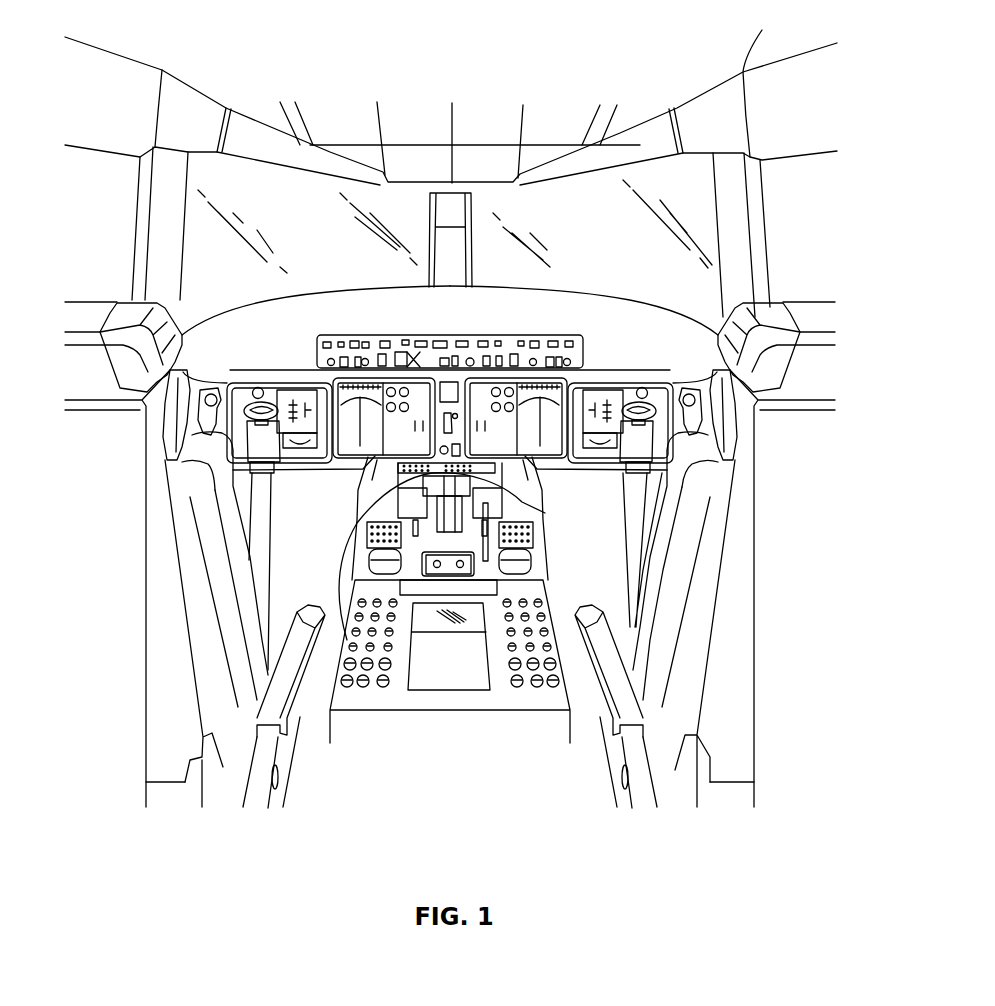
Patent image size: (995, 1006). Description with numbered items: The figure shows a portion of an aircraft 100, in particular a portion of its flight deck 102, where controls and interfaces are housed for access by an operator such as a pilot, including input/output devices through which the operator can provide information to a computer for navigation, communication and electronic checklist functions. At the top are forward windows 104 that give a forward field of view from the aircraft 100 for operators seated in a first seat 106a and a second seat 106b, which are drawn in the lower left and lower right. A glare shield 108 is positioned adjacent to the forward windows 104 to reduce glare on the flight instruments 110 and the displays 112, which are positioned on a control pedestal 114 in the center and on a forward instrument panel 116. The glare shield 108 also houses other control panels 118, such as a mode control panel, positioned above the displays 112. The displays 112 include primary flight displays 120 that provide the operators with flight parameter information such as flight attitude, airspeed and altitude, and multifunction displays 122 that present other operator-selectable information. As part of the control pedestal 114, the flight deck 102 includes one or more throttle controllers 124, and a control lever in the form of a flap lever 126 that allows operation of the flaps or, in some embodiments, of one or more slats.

The aircraft 100 is at (233, 45).
The flight deck 102 is at (565, 854).
The forward windows 104 is at (315, 197).
The first seat 106a is at (225, 603).
The second seat 106b is at (677, 590).
The glare shield 108 is at (672, 343).
The flight instruments 110 is at (652, 320).
The displays 112 is at (290, 310).
The control pedestal 114 is at (472, 768).
The forward instrument panel 116 is at (608, 480).
The control panels 118 is at (462, 333).
The primary flight displays 120 is at (287, 372).
The multifunction displays 122 is at (336, 476).
The throttle controllers 124 is at (388, 509).
The flap lever 126 is at (513, 465).